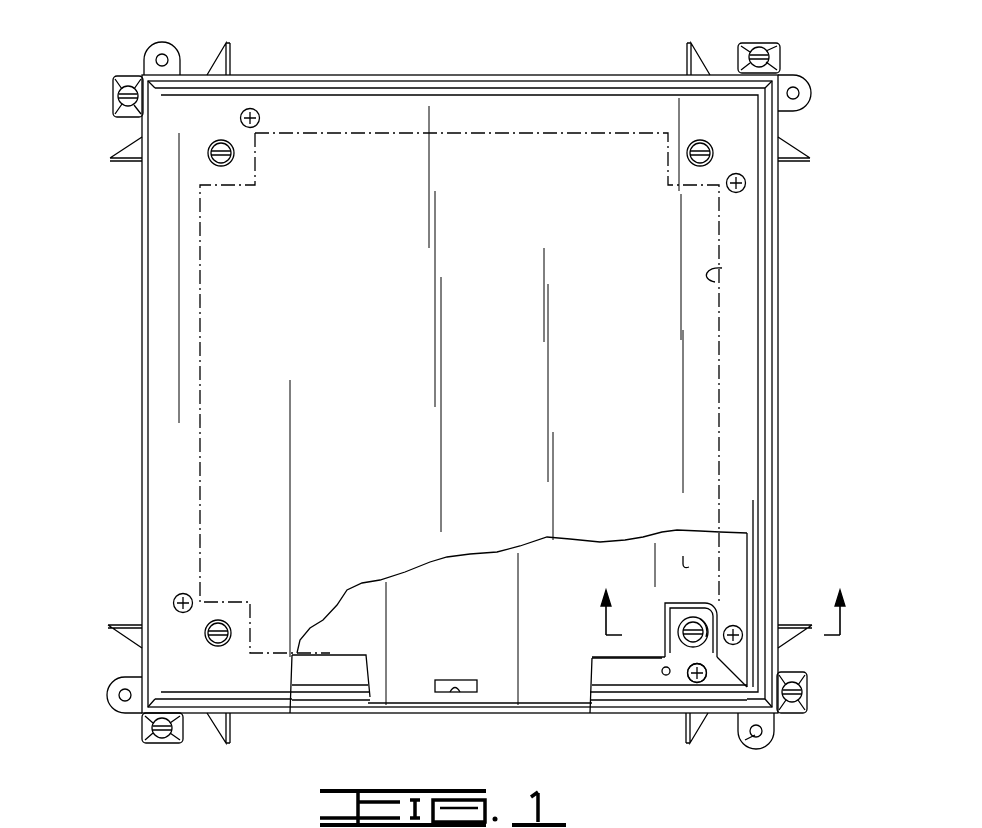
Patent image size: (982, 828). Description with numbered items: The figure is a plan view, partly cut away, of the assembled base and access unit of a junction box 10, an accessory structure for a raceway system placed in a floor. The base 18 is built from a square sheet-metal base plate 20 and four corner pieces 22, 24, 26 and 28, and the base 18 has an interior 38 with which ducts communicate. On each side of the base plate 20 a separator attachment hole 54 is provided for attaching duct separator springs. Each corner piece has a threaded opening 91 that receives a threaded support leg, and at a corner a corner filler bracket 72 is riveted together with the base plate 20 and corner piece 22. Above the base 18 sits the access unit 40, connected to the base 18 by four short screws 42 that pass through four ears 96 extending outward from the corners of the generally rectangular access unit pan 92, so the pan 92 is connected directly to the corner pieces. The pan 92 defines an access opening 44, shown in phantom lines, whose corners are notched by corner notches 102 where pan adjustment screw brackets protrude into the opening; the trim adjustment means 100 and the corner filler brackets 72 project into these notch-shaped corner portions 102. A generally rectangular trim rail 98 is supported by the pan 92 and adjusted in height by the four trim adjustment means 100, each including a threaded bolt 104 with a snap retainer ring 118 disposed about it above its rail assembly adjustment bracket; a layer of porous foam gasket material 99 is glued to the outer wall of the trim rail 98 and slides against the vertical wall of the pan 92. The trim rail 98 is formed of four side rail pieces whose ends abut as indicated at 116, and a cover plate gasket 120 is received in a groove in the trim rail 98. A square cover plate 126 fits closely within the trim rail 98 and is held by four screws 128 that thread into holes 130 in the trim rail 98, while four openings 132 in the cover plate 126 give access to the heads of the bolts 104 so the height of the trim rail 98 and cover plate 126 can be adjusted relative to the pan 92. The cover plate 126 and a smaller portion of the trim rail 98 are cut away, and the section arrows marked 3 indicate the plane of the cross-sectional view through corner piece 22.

The junction box 10 is at (797, 49).
The base 18 is at (463, 383).
The corner piece 22 is at (775, 735).
The corner piece 24 is at (800, 84).
The corner piece 26 is at (165, 43).
The corner piece 28 is at (120, 680).
The base plate 20 is at (483, 700).
The interior 38 is at (690, 563).
The access unit 40 is at (473, 390).
The short screws 42 is at (118, 86).
The access opening 44 is at (747, 275).
The separator attachment hole 54 is at (455, 690).
The corner filler bracket 72 is at (672, 622).
The threaded opening 91 is at (753, 765).
The access unit pan 92 is at (773, 420).
The ears 96 is at (115, 117).
The trim rail 98 is at (377, 92).
The porous foam gasket material 99 is at (768, 402).
The trim adjustment means 100 is at (715, 615).
The corner notches 102 is at (700, 195).
The threaded bolt 104 is at (226, 625).
The abutting ends of side rail pieces 116 is at (727, 680).
The snap retainer ring 118 is at (697, 656).
The cover plate gasket 120 is at (756, 538).
The cover plate 126 is at (388, 290).
The screws 128 is at (257, 110).
The holes 130 is at (666, 676).
The openings 132 is at (207, 640).
The section line 3- 3 is at (721, 601).